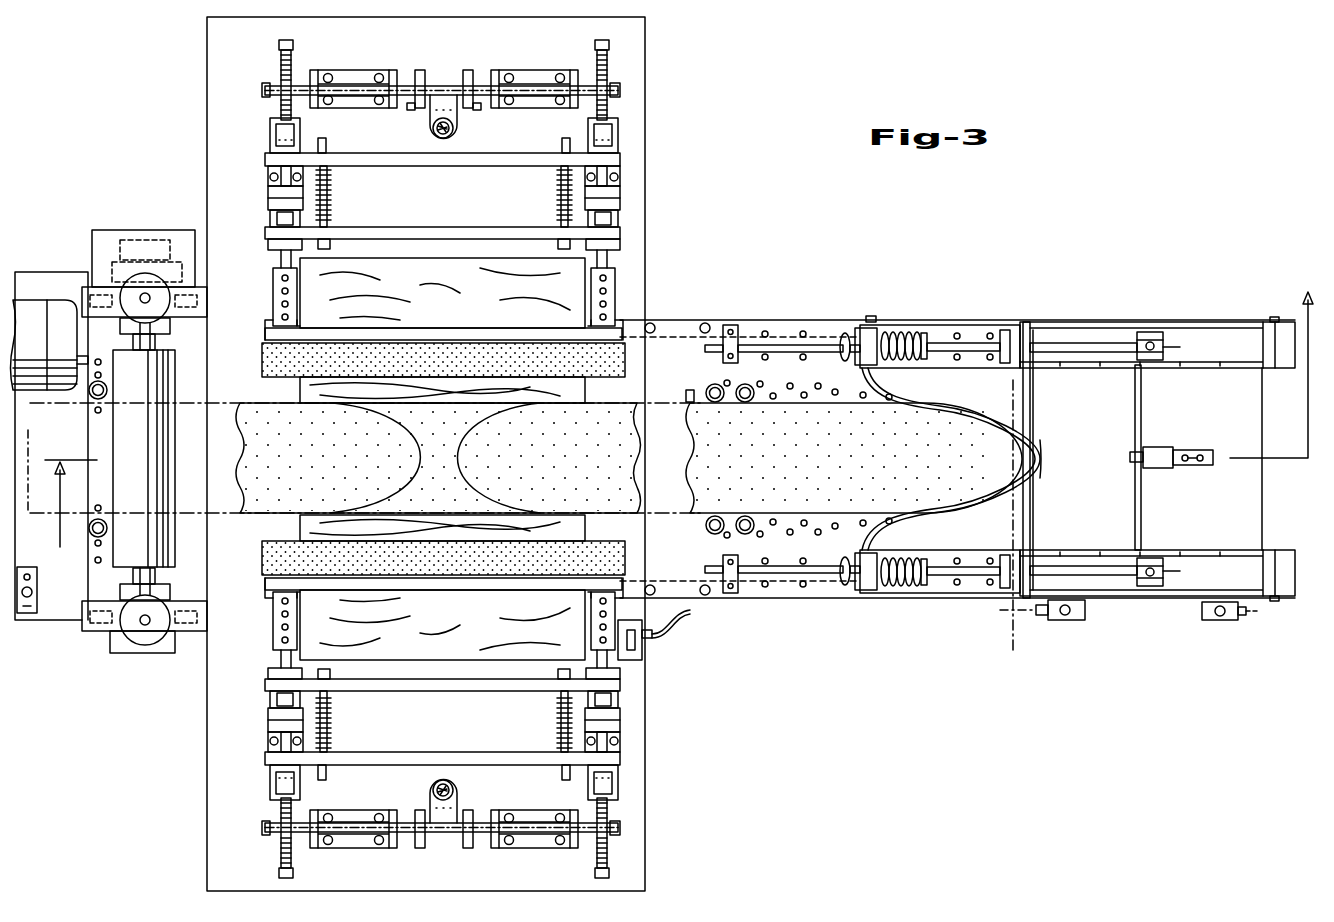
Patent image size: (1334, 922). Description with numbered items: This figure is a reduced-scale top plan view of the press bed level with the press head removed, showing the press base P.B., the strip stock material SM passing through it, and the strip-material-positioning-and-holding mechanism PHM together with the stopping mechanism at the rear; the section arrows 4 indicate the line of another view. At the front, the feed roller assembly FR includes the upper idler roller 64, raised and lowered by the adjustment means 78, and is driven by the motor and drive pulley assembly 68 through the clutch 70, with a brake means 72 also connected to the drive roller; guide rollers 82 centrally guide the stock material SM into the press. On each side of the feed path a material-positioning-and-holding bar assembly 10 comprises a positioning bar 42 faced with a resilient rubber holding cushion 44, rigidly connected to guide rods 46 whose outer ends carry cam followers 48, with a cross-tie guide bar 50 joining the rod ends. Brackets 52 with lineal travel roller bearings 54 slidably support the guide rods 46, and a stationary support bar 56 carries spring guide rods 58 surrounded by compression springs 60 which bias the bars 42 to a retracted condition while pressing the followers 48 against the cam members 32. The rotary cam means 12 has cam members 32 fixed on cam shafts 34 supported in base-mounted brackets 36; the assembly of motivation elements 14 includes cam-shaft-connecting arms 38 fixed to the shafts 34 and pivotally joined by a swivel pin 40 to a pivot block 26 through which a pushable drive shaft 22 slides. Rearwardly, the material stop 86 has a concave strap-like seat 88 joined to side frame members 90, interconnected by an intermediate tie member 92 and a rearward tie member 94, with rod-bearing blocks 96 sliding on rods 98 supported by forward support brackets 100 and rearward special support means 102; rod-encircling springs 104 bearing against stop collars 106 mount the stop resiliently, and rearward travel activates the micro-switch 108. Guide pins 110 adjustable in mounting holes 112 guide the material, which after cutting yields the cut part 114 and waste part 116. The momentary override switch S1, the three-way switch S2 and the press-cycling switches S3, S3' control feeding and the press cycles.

The material-positioning-and-holding bar assembly 10 is at (626, 287).
The rotary cam means 12 is at (265, 79).
The assembly of motivation elements 14 is at (385, 70).
The drive shaft 22 is at (454, 128).
The pivot block 26 is at (430, 128).
The cam member 32 is at (280, 54).
The cam shaft 34 is at (420, 70).
The support bracket 36 is at (324, 70).
The cam-shaft-connecting arm 38 is at (468, 70).
The swivel pin 40 is at (478, 100).
The positioning bar 42 is at (408, 330).
The resilient rubber holding cushion 44 is at (362, 346).
The guide rod 46 is at (282, 172).
The cam follower 48 is at (272, 788).
The cross-tie guide bar 50 is at (418, 167).
The bracket 52 is at (262, 201).
The lineal travel roller bearing 54 is at (270, 220).
The stationary support bar 56 is at (432, 228).
The spring guide rod 58 is at (324, 148).
The compression spring 60 is at (330, 190).
The upper idler roller 64 is at (156, 392).
The motor and drive pulley assembly 68 is at (28, 300).
The clutch 70 is at (166, 240).
The brake means 72 is at (113, 644).
The adjustment means 78 is at (160, 286).
The guide roller 82 is at (94, 474).
The material stop 86 is at (1010, 419).
The strap-like seat 88 is at (924, 394).
The side frame member 90 is at (941, 317).
The intermediate tie member 92 is at (1030, 490).
The rearward tie member 94 is at (1135, 500).
The rod-bearing block 96 is at (868, 320).
The rod 98 is at (780, 344).
The support bracket 100 is at (733, 324).
The special support means 102 is at (1156, 330).
The rod-encircling spring 104 is at (901, 330).
The stop collar 106 is at (1002, 330).
The micro-switch 108 is at (1162, 446).
The guide pin 110 is at (744, 402).
The mounting hole 112 is at (827, 392).
The cut part 114 is at (685, 394).
The waste part 116 is at (437, 405).
The section arrow 4 is at (679, 420).
The feed roller assembly FR is at (188, 352).
The strip-material-positioning-and-holding mechanism PHM is at (628, 151).
The press base P.B. is at (198, 716).
The strip stock material SM is at (270, 490).
The momentary override switch S1 is at (30, 566).
The 3-way switch S2 is at (640, 652).
The press-cycling switch S3 is at (1044, 625).
The press-cycling switch S3' is at (1230, 626).